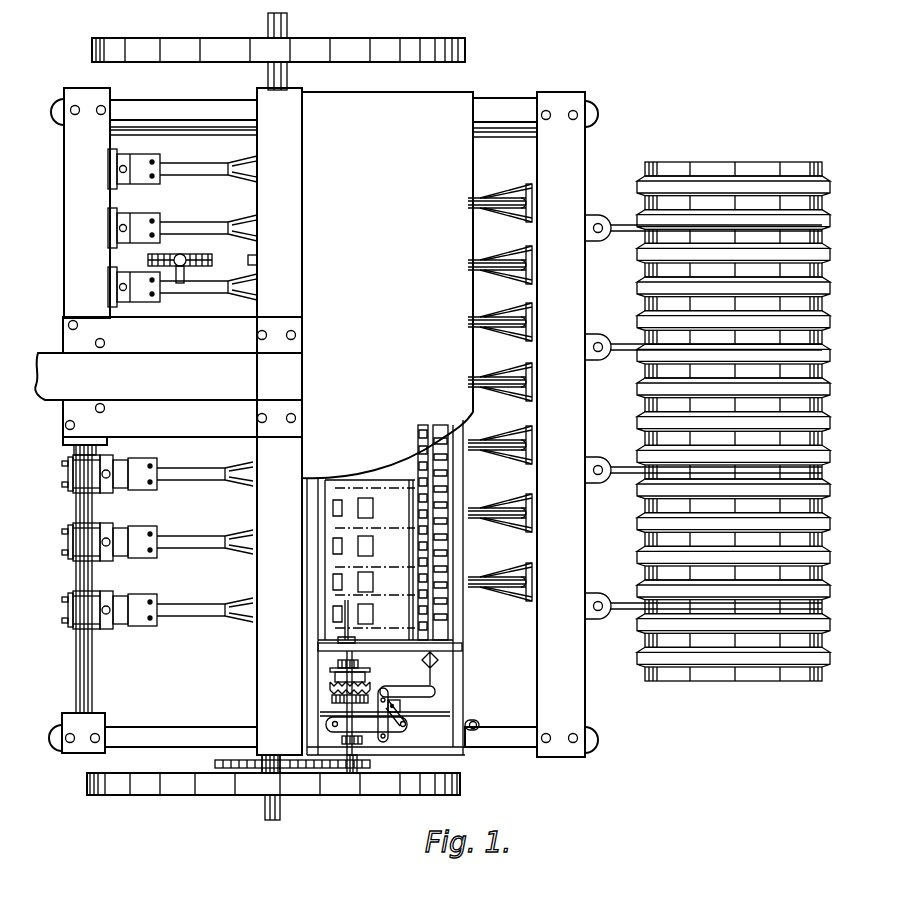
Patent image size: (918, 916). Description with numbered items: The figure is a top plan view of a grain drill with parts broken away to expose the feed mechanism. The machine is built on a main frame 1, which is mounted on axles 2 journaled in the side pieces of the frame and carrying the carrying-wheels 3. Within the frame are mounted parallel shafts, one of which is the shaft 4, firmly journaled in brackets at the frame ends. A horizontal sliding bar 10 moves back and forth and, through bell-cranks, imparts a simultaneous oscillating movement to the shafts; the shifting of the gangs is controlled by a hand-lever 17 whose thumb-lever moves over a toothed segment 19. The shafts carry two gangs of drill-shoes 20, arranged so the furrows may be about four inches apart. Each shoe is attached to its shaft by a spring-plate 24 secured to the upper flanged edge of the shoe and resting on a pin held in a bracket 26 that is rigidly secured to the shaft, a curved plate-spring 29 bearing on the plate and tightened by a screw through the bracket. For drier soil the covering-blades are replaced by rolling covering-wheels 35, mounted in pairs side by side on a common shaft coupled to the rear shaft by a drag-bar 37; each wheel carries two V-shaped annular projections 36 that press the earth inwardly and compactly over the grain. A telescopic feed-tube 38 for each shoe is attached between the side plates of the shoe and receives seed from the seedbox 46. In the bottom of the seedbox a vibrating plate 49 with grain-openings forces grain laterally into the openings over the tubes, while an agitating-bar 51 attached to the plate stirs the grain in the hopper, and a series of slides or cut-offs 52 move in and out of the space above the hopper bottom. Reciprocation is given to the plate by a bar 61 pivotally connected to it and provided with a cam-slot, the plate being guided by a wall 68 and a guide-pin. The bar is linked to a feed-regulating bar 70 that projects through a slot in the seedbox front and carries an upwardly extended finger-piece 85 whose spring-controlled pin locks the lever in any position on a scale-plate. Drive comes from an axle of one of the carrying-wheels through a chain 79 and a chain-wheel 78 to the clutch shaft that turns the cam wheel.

The main frame 1 is at (316, 422).
The axles 2 is at (266, 74).
The carrying-wheels 3 is at (327, 40).
The shaft 4 is at (92, 674).
The horizontal sliding bar 10 is at (214, 133).
The hand-lever 17 is at (182, 284).
The toothed segment 19 is at (188, 290).
The drill-shoes 20 is at (208, 175).
The spring-plates 24 is at (143, 459).
The bracket 26 is at (113, 493).
The curved plate-spring 29 is at (121, 462).
The covering-wheels 35 is at (731, 157).
The annular projections 36 is at (640, 297).
The drag-bar 37 is at (613, 225).
The telescopic feed-tube 38 is at (499, 210).
The seedbox 46 is at (387, 285).
The vibrating plate 49 is at (440, 672).
The agitating-bar 51 is at (430, 637).
The slides or cut-offs 52 is at (373, 508).
The bar 61 is at (400, 687).
The wall 68 is at (462, 650).
The feed-regulating bar 70 is at (433, 734).
The chain-wheel 78 is at (371, 765).
The chain 79 is at (300, 760).
The finger-piece 85 is at (480, 722).